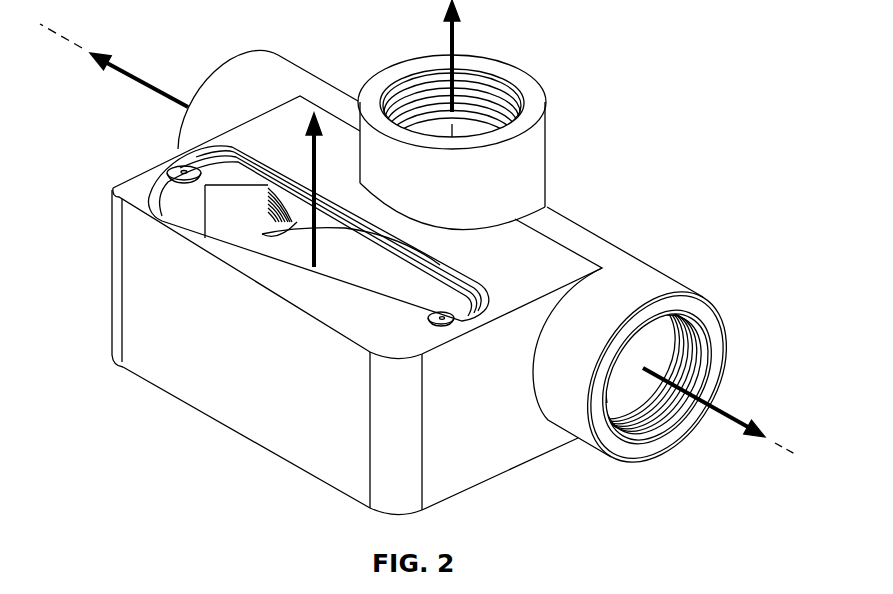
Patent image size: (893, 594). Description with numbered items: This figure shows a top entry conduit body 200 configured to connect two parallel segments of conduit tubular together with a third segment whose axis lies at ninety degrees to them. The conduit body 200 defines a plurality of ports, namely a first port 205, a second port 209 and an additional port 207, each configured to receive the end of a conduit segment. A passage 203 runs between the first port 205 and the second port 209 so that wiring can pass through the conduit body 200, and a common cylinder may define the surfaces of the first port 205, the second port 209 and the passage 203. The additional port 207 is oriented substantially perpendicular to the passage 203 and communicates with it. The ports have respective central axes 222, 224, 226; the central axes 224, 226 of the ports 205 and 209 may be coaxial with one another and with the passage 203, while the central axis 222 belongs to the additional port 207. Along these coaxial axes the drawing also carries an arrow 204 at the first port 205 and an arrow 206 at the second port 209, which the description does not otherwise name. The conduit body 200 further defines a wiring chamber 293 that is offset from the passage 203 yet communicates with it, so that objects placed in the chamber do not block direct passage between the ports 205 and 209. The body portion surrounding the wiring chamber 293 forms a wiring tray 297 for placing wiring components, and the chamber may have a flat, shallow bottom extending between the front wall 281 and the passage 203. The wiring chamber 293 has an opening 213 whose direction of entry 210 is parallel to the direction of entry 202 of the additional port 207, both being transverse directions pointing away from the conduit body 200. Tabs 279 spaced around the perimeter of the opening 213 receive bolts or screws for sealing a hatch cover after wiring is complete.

The conduit body 200 is at (420, 257).
The direction of entry of additional port 202 is at (446, 18).
The passage 203 is at (377, 272).
The second hub axis direction arrow 204 is at (118, 75).
The first port 205 is at (219, 63).
The third hub axis direction arrow 206 is at (733, 418).
The additional port 207 is at (476, 120).
The second port 209 is at (719, 368).
The direction of entry of opening 210 is at (305, 237).
The opening 213 is at (316, 198).
The central axis 222 is at (458, 112).
The central axis 224 is at (62, 32).
The central axis 226 is at (777, 448).
The tabs 279 is at (271, 198).
The front wall 281 is at (347, 482).
The wiring chamber 293 is at (288, 198).
The wiring tray 297 is at (357, 305).